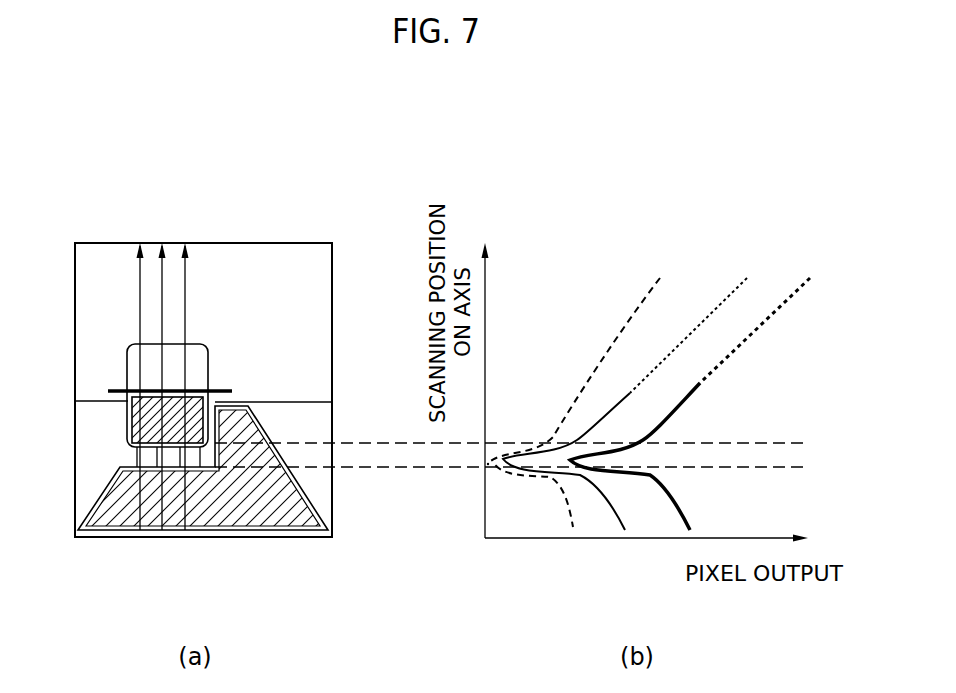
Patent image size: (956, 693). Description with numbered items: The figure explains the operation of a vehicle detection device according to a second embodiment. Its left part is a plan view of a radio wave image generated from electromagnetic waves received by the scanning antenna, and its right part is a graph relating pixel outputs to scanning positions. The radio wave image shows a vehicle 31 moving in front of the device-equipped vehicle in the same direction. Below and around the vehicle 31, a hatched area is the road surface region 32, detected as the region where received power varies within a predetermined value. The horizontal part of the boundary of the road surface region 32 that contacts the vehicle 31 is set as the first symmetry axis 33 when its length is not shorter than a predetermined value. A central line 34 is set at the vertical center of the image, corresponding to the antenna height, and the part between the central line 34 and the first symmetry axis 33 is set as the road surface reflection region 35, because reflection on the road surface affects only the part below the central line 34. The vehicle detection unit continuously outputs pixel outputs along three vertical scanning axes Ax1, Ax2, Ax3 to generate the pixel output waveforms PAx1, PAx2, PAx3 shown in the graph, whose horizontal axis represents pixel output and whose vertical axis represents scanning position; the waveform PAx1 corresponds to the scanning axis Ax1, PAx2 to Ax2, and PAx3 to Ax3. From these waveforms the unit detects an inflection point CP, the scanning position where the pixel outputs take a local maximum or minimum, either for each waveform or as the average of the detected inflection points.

The vehicle 31 is at (133, 343).
The road surface region 32 is at (233, 527).
The first symmetry axis 33 is at (123, 463).
The central line 34 is at (220, 387).
The road surface reflection region 35 is at (130, 417).
The scanning axis Ax1 is at (138, 283).
The scanning axis Ax2 is at (160, 280).
The scanning axis Ax3 is at (187, 280).
The pixel output waveform PAx1 is at (633, 307).
The pixel output waveform PAx2 is at (712, 307).
The pixel output waveform PAx3 is at (788, 300).
The inflection point CP is at (482, 470).